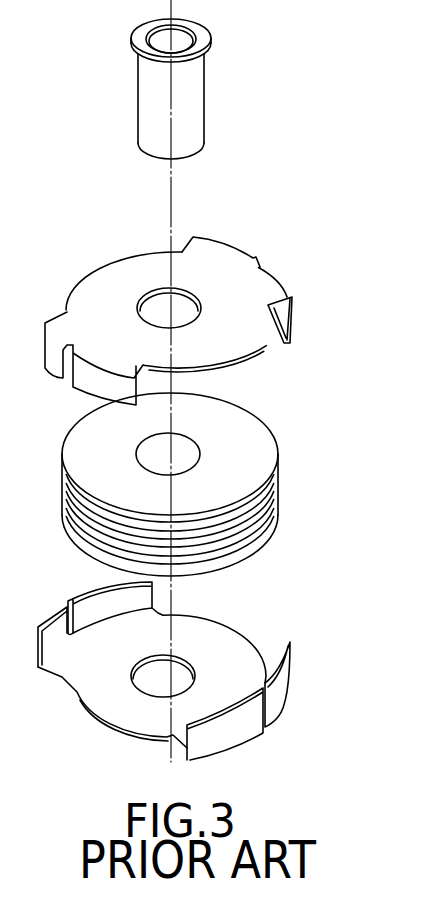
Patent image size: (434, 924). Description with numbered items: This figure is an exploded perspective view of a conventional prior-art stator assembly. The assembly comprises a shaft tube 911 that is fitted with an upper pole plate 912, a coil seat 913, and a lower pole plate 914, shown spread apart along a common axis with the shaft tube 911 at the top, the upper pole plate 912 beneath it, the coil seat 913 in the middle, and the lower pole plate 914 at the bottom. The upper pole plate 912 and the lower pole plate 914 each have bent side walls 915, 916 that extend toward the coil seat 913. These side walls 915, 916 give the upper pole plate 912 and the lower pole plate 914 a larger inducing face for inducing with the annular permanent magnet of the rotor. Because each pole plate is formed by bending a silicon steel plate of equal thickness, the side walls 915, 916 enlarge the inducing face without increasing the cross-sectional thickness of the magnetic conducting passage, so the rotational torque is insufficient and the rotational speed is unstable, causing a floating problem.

The shaft tube 911 is at (147, 118).
The upper pole plate 912 is at (283, 278).
The coil seat 913 is at (265, 452).
The lower pole plate 914 is at (238, 662).
The bent side wall 915 is at (292, 326).
The bent side wall 916 is at (283, 687).